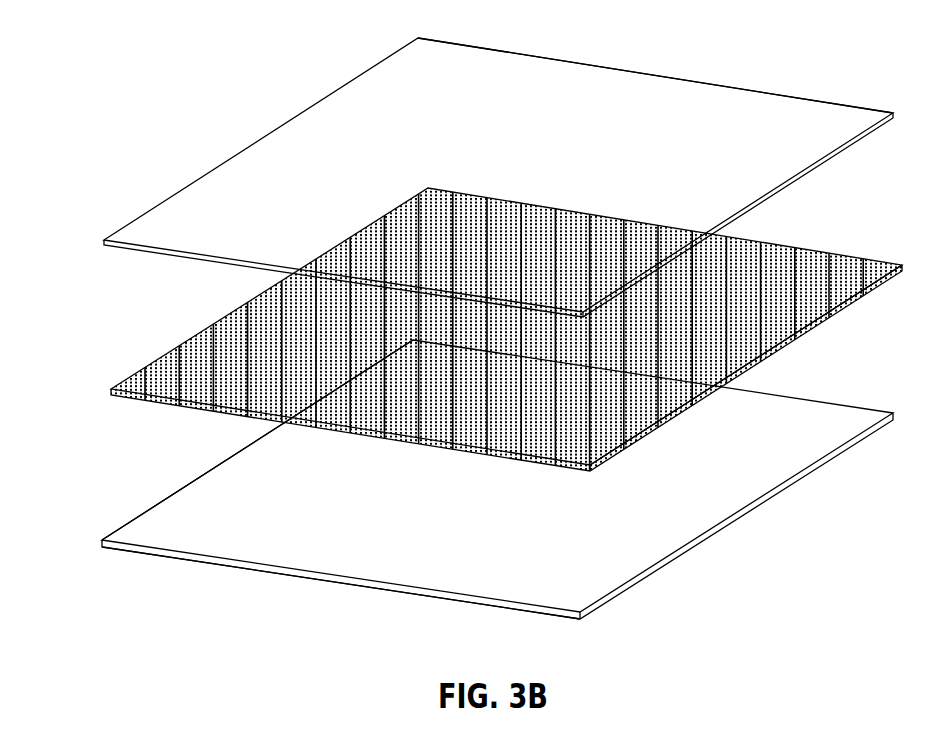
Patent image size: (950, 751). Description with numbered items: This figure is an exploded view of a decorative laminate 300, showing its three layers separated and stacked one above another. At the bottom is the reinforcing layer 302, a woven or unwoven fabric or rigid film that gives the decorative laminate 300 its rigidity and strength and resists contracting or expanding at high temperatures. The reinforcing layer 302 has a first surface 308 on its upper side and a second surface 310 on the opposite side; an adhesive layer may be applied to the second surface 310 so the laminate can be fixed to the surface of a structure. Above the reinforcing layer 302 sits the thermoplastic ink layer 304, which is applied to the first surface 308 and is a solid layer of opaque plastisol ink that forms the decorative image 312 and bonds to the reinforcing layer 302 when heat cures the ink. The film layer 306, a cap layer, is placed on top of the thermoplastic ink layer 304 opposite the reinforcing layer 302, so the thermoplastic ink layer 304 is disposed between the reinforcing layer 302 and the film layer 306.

The decorative laminate 300 is at (755, 52).
The reinforcing layer 302 is at (102, 542).
The thermoplastic ink layer 304 is at (111, 392).
The film layer 306 is at (103, 242).
The first surface 308 is at (203, 498).
The second surface 310 is at (197, 563).
The decorative image 312 is at (820, 221).